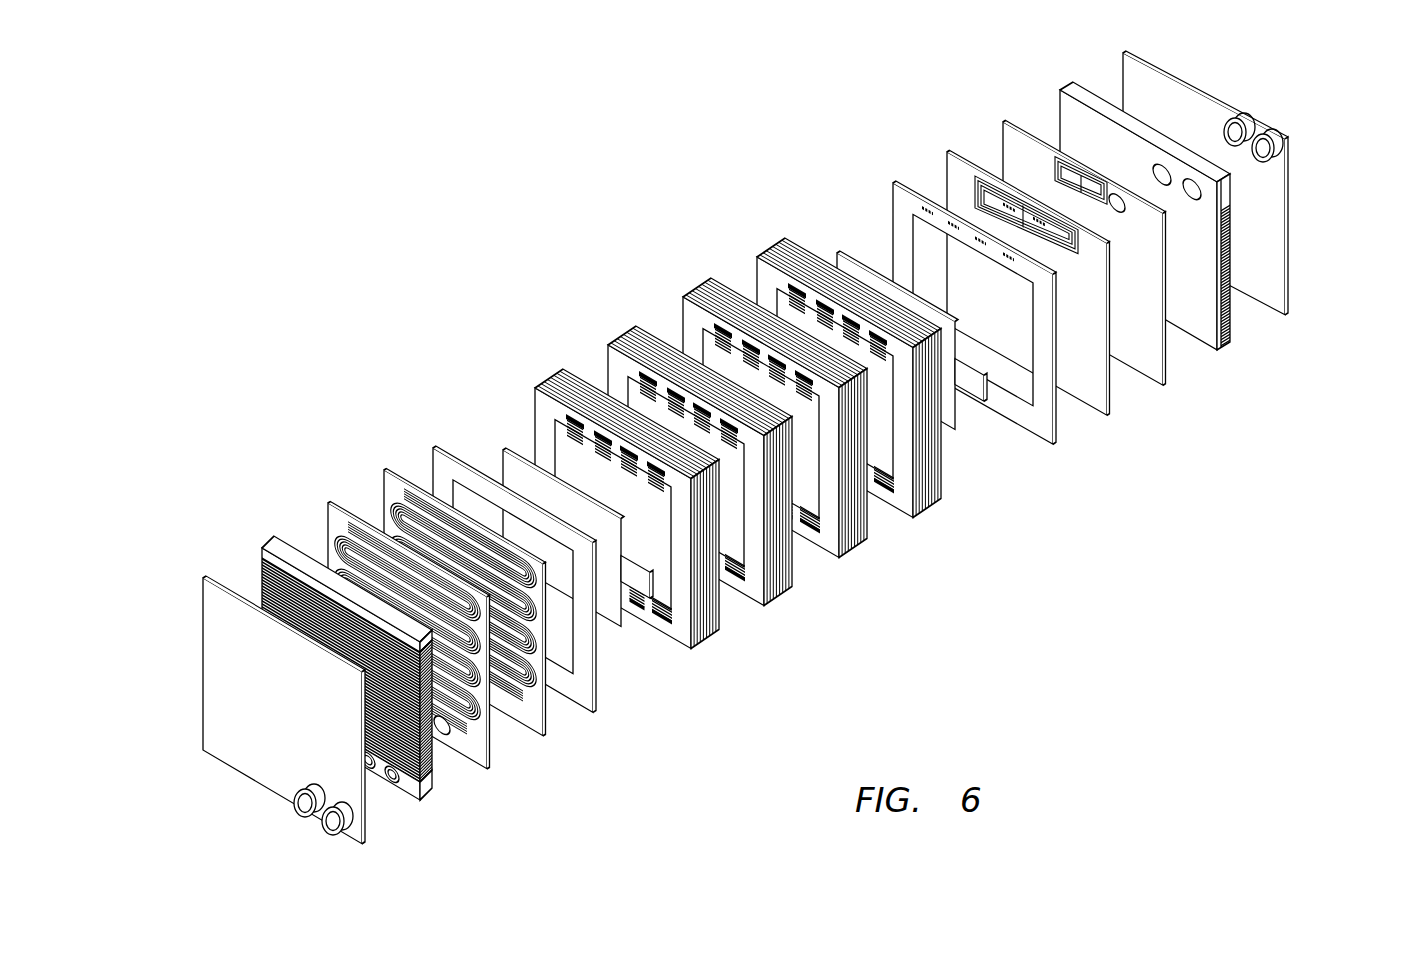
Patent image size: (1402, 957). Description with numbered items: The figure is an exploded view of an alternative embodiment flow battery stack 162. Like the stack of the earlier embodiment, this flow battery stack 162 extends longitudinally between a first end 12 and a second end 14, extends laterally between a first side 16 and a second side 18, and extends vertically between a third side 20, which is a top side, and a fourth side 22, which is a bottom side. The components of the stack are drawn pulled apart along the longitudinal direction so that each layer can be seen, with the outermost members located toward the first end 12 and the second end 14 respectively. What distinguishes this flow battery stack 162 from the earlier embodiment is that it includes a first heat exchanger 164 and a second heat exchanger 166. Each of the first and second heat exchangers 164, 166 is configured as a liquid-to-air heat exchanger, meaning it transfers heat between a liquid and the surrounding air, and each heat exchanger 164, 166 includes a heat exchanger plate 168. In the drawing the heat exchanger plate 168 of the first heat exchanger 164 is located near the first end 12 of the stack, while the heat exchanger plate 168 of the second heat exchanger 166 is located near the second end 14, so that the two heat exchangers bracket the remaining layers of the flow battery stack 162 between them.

The first end 12 is at (739, 469).
The second end 14 is at (1257, 182).
The first side 16 is at (699, 552).
The second side 18 is at (184, 739).
The third side 20 is at (1270, 106).
The fourth side 22 is at (1161, 204).
The flow battery stack 162 is at (472, 209).
The first heat exchanger 164 is at (738, 529).
The second heat exchanger 166 is at (1050, 66).
The heat exchanger plate 168 is at (434, 792).